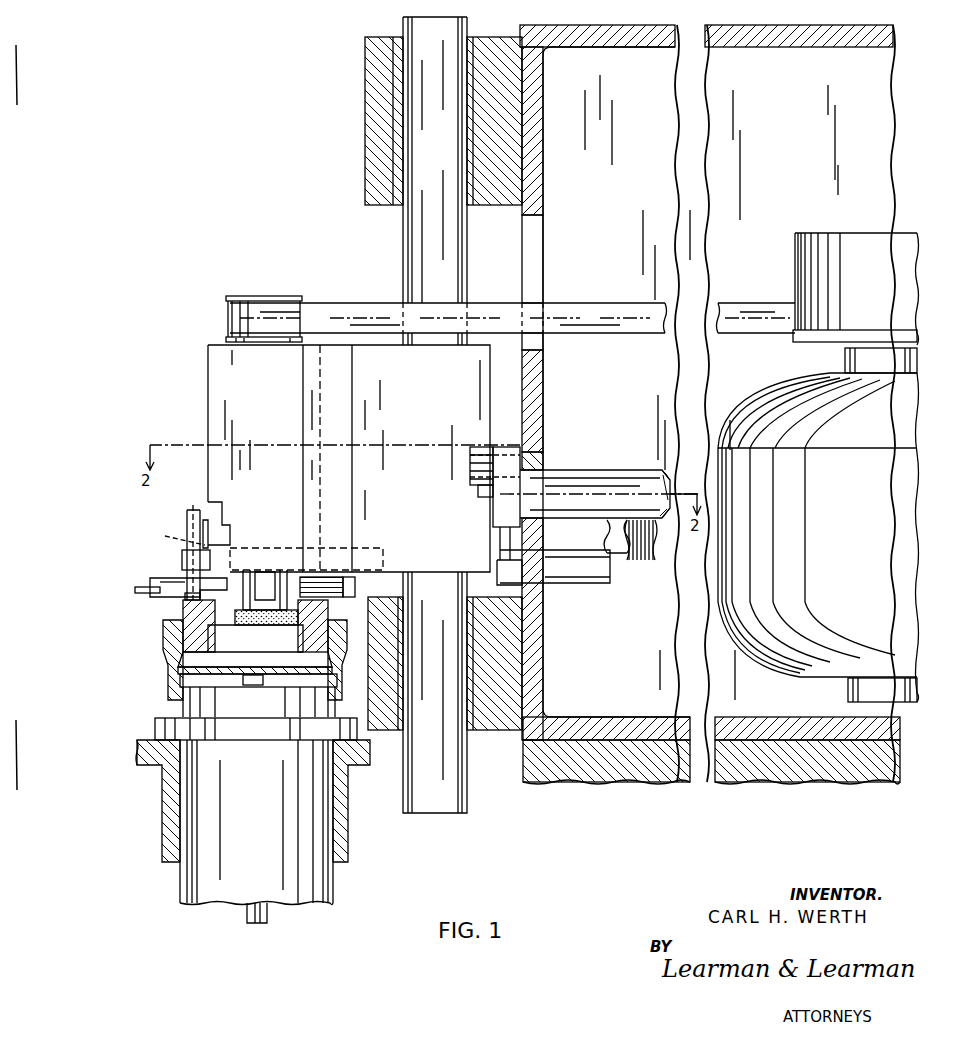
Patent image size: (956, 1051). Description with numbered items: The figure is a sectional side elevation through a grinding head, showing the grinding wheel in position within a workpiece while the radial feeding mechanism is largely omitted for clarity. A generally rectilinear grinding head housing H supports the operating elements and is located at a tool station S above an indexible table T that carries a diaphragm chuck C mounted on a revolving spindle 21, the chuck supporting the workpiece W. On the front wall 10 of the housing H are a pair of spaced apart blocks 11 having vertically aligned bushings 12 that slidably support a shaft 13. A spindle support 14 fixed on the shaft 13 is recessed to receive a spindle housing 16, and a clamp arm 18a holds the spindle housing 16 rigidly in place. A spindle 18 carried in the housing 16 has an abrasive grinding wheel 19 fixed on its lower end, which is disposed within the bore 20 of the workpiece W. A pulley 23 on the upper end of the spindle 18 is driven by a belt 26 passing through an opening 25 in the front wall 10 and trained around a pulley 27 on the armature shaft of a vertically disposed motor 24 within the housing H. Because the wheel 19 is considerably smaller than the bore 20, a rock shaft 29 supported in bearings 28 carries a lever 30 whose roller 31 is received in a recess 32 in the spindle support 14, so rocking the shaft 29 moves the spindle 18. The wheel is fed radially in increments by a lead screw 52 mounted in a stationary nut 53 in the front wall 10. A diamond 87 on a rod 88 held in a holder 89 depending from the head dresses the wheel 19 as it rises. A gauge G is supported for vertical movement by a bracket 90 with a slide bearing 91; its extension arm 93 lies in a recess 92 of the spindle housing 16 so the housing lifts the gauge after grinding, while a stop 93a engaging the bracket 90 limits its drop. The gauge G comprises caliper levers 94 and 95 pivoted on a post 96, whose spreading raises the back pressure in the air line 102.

The front wall 10 is at (544, 434).
The blocks 11 is at (506, 115).
The bushings 12 is at (395, 212).
The shaft 13 is at (440, 115).
The spindle support 14 is at (431, 423).
The spindle housing 16 is at (270, 423).
The clamp arm 18a is at (340, 423).
The spindle 18 is at (270, 581).
The grinding wheel 19 is at (270, 630).
The bore 20 is at (328, 622).
The revolving spindle 21 is at (259, 804).
The pulley 23 is at (283, 296).
The motor 24 is at (858, 532).
The opening 25 is at (532, 268).
The belt 26 is at (619, 307).
The pulley 27 is at (800, 270).
The bearings 28 is at (545, 470).
The rock shaft 29 is at (603, 482).
The lever 30 is at (509, 490).
The roller 31 is at (484, 447).
The recess 32 is at (479, 492).
The lead screw 52 is at (642, 565).
The stationary nut 53 is at (620, 560).
The diamond 87 is at (285, 579).
The rod 88 is at (352, 577).
The holder 89 is at (330, 577).
The bracket 90 is at (380, 550).
The slide bearing 91 is at (212, 555).
The recess 92 is at (222, 510).
The extension arm 93 is at (210, 510).
The stop 93a is at (167, 536).
The caliper lever 94 is at (190, 597).
The caliper lever 95 is at (185, 578).
The post 96 is at (193, 510).
The air line 102 is at (147, 593).
The diaphragm chuck C is at (168, 664).
The gauge G is at (162, 582).
The grinding head housing H is at (604, 698).
The tool station S is at (765, 782).
The indexible table T is at (356, 828).
The workpiece W is at (342, 665).